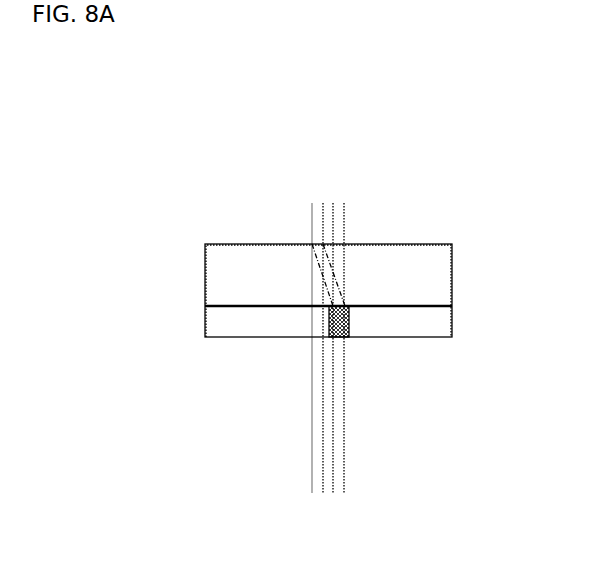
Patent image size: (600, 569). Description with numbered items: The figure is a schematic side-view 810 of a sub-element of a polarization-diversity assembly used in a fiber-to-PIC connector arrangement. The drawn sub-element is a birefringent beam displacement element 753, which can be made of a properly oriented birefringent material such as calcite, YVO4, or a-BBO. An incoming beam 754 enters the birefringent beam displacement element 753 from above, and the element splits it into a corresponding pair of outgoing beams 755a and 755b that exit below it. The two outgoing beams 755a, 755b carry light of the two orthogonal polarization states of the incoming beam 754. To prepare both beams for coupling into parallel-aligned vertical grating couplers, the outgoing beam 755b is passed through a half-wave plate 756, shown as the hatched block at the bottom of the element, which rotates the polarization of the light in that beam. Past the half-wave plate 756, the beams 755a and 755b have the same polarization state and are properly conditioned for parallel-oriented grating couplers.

The schematic side-view 810 is at (95, 85).
The birefringent beam displacement element 753 is at (215, 298).
The incoming beam 754 is at (318, 210).
The outgoing beam 755a is at (317, 447).
The outgoing beam 755b is at (342, 485).
The half-wave plate 756 is at (350, 325).